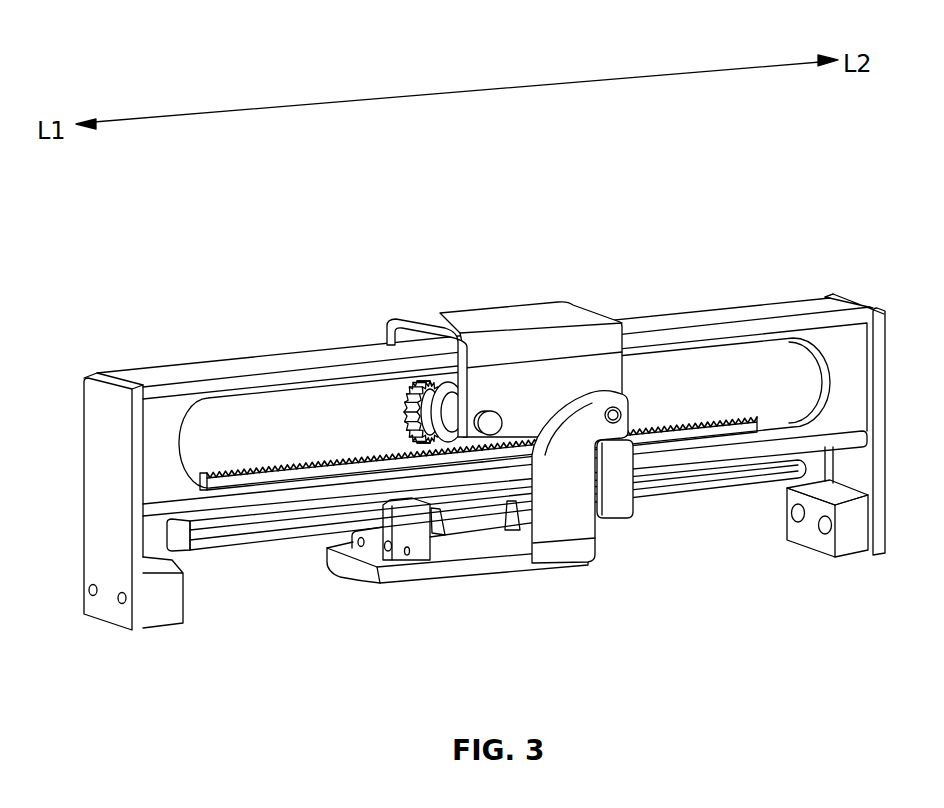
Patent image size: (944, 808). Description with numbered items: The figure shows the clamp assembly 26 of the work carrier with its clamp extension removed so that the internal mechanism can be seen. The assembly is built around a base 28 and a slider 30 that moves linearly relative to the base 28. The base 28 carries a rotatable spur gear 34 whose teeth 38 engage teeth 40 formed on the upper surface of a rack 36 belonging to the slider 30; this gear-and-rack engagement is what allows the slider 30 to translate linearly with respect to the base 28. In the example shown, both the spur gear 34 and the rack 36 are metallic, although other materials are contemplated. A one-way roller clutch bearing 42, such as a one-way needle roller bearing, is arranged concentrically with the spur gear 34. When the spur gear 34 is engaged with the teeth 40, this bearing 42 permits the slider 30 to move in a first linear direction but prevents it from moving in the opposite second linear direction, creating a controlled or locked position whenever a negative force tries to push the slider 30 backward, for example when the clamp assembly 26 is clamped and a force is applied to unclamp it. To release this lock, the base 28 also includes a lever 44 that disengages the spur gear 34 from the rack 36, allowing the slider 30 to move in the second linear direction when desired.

The clamp assembly 26 is at (461, 444).
The base 28 is at (557, 502).
The slider 30 is at (856, 347).
The spur gear 34 is at (423, 372).
The rack 36 is at (744, 420).
The teeth 38 is at (405, 398).
The teeth 40 is at (303, 463).
The one-way roller clutch bearing 42 is at (450, 416).
The lever 44 is at (620, 490).